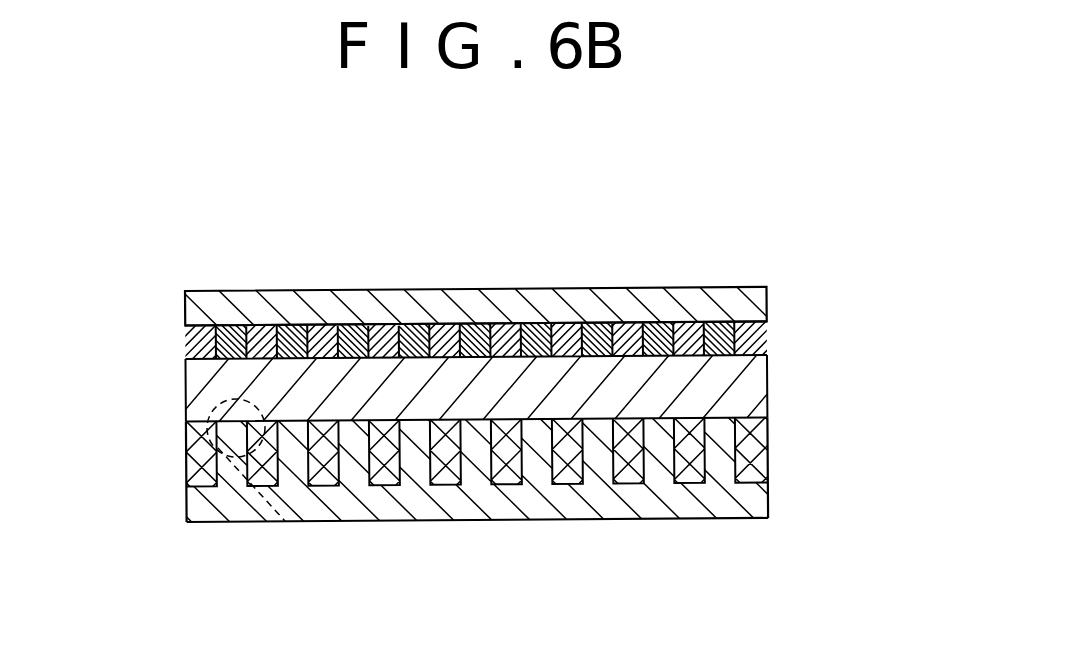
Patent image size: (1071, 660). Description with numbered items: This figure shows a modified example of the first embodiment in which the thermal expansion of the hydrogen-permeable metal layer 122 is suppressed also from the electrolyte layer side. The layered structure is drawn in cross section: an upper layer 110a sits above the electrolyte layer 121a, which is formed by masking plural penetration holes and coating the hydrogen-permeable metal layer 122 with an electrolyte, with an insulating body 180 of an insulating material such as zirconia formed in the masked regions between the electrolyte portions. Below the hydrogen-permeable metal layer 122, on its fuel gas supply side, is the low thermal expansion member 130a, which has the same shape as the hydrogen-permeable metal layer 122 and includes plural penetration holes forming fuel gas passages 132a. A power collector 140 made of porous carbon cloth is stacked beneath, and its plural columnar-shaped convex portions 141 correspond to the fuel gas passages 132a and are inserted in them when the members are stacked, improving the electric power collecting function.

The first substrate 110a is at (767, 309).
The electrolyte layer 121a is at (184, 328).
The insulating body 180 is at (235, 327).
The hydrogen-permeable metal layer 122 is at (185, 388).
The columnar-shaped convex portion 141 is at (723, 450).
The low thermal expansion member 130a is at (195, 477).
The power collector 140 is at (243, 523).
The fuel gas passage 132a is at (290, 523).